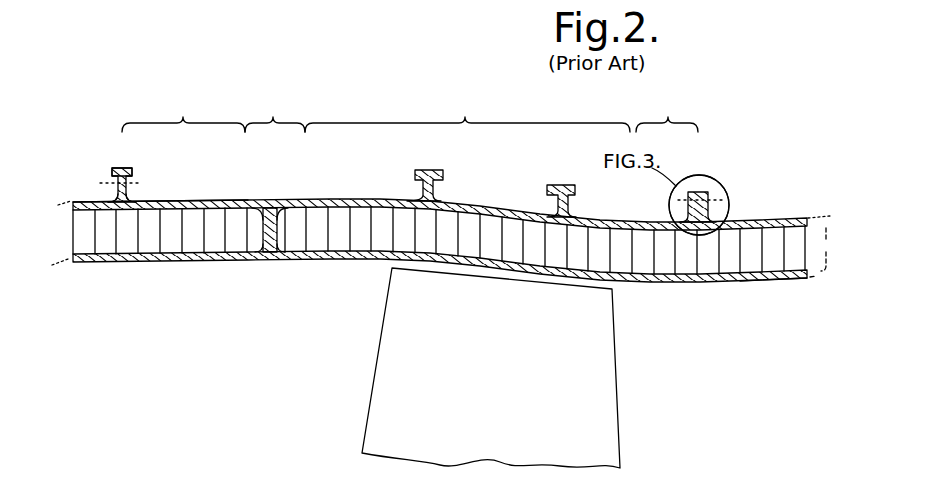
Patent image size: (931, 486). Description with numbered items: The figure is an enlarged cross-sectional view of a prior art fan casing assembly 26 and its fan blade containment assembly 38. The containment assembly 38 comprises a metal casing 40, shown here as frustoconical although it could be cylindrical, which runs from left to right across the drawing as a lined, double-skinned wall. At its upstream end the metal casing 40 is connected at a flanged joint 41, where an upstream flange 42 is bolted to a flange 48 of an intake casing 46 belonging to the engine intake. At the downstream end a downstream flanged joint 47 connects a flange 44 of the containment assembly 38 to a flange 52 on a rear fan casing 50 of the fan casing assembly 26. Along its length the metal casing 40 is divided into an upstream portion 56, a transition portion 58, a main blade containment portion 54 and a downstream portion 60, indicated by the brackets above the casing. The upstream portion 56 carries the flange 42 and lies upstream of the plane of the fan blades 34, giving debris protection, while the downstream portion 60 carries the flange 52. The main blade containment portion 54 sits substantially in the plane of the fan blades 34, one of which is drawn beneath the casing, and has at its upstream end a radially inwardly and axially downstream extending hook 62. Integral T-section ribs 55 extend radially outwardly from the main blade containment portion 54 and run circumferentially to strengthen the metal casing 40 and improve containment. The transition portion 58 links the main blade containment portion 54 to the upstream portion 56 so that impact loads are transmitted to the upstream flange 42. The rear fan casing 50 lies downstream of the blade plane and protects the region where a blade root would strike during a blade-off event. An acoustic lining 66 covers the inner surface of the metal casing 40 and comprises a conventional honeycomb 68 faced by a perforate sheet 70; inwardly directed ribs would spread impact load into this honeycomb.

The fan casing assembly 26 is at (380, 173).
The fan blades 34 is at (394, 364).
The fan blade containment assembly 38 is at (698, 169).
The metal casing 40 is at (358, 200).
The flanged joint 41 is at (147, 193).
The upstream flange 42 is at (131, 172).
The flange 44 is at (703, 192).
The intake casing 46 is at (90, 201).
The downstream flanged joint 47 is at (676, 200).
The flange 48 is at (113, 170).
The rear fan casing 50 is at (792, 218).
The flange 52 is at (712, 200).
The main blade containment portion 54 is at (465, 123).
The T-section ribs 55 is at (545, 184).
The upstream portion 56 is at (183, 123).
The transition portion 58 is at (273, 123).
The downstream portion 60 is at (668, 123).
The hook 62 is at (287, 262).
The acoustic lining 66 is at (173, 235).
The honeycomb 68 is at (673, 257).
The perforate sheet 70 is at (713, 283).